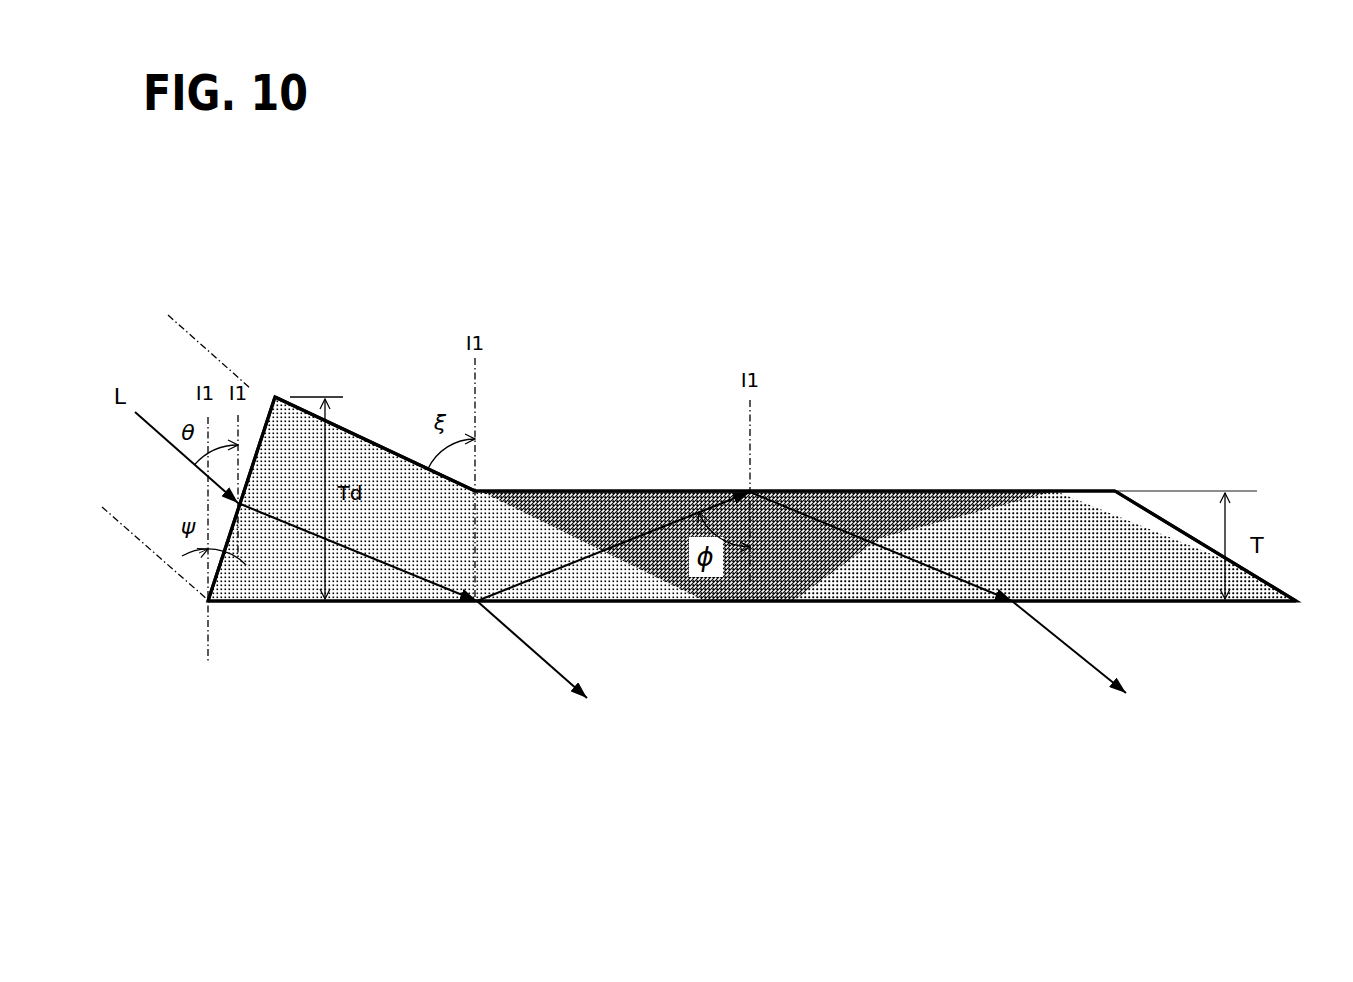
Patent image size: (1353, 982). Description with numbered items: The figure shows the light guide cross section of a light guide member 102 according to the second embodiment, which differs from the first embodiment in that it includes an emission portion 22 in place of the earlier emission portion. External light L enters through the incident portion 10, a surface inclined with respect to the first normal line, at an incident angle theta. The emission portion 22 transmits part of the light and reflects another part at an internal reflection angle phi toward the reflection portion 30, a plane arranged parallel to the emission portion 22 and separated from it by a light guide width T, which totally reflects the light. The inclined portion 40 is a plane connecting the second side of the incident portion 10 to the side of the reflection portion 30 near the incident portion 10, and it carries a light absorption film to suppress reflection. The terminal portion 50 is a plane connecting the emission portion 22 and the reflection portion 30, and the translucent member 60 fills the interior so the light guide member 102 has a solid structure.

The light guide member 102 is at (1117, 339).
The incident portion 10 is at (264, 430).
The inclined portion 40 is at (353, 432).
The reflection portion 30 is at (800, 489).
The emission portion 22 is at (865, 604).
The terminal portion 50 is at (1154, 513).
The translucent member 60 is at (1027, 531).